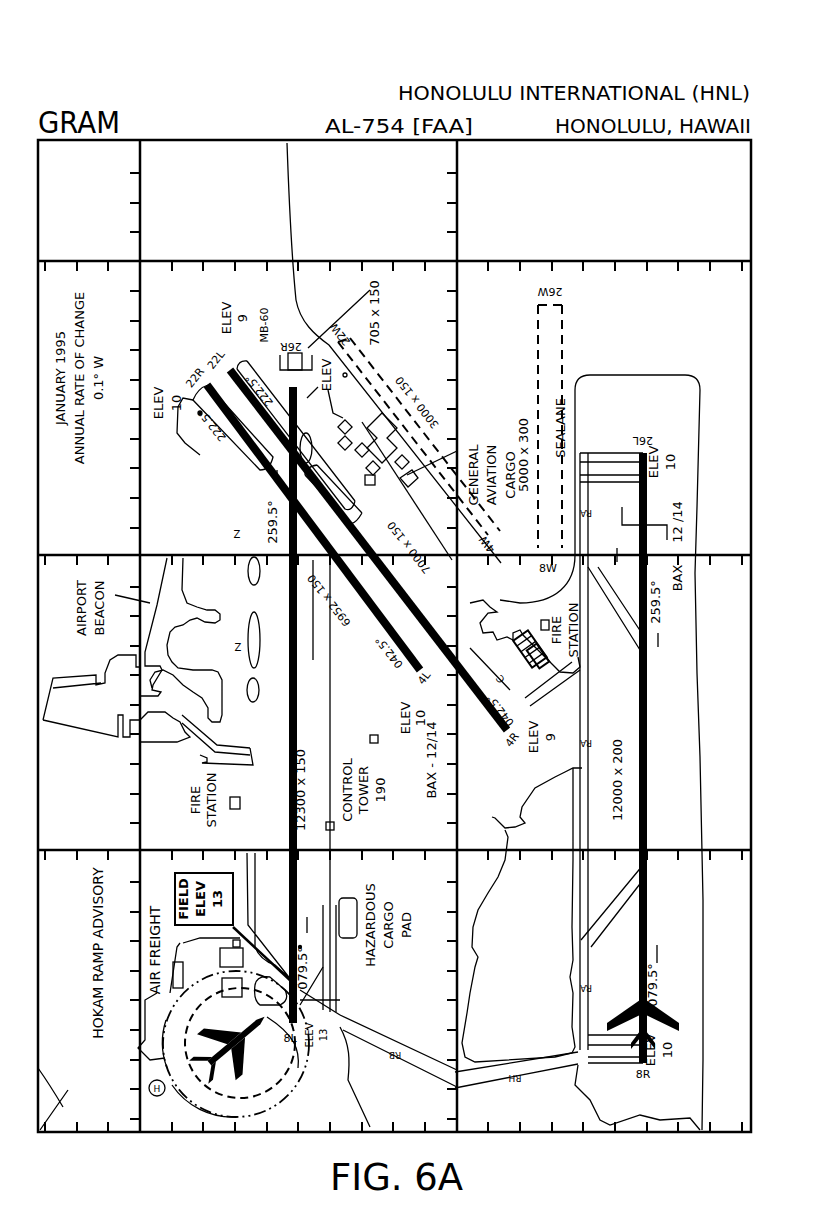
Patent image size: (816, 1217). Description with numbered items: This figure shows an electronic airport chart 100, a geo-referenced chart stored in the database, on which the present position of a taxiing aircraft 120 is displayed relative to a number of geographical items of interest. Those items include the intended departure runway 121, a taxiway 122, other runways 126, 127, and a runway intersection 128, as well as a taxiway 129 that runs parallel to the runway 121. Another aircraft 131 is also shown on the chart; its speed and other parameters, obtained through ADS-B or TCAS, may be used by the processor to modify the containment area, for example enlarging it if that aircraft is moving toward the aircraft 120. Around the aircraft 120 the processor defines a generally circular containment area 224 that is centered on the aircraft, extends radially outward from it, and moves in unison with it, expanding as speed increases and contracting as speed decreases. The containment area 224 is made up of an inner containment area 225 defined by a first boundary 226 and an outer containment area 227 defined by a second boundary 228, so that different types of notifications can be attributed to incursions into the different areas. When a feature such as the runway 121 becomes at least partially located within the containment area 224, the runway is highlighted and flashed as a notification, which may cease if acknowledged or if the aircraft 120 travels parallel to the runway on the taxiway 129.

The airport chart 100 is at (291, 95).
The aircraft 120 is at (217, 1057).
The runway 121 is at (334, 829).
The taxiway 122 is at (298, 1068).
The runway 126 is at (231, 364).
The runway 127 is at (645, 757).
The runway intersection 128 is at (230, 465).
The taxiway 129 is at (331, 737).
The other aircraft 131 is at (680, 1007).
The containment area 224 is at (163, 997).
The inner containment area 225 is at (276, 1086).
The first boundary 226 is at (322, 999).
The outer containment area 227 is at (182, 1097).
The second boundary 228 is at (163, 1045).